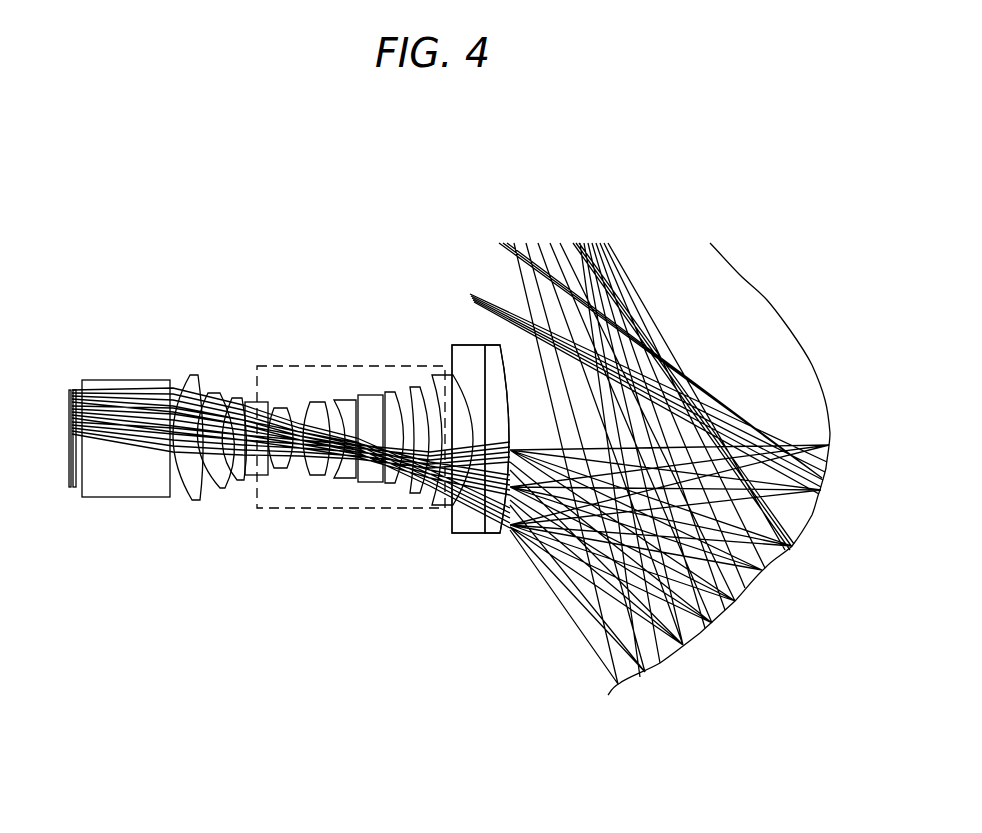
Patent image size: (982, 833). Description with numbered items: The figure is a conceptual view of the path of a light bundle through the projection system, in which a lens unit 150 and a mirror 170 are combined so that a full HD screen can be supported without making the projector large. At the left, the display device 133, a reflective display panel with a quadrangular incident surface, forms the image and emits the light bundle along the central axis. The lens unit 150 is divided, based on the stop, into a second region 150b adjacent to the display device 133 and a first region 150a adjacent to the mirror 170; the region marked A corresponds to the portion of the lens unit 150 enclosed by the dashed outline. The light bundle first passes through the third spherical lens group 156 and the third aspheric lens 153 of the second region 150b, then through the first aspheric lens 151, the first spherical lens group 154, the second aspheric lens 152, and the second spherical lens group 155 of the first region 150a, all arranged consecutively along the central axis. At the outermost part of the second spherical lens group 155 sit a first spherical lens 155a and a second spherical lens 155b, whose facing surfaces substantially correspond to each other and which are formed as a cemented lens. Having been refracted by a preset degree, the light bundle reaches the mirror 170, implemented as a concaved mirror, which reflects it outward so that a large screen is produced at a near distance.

The display device 133 is at (69, 447).
The lens unit 150 is at (333, 343).
The first region 150a is at (510, 617).
The second region 150b is at (272, 617).
The first aspheric lens 151 is at (317, 484).
The second aspheric lens 152 is at (420, 504).
The third aspheric lens 153 is at (287, 480).
The first spherical lens group 154 is at (410, 515).
The second spherical lens group 155 is at (503, 537).
The first spherical lens 155a is at (463, 353).
The second spherical lens 155b is at (490, 347).
The third spherical lens group 156 is at (272, 513).
The mirror 170 is at (630, 687).
The region A is at (383, 366).